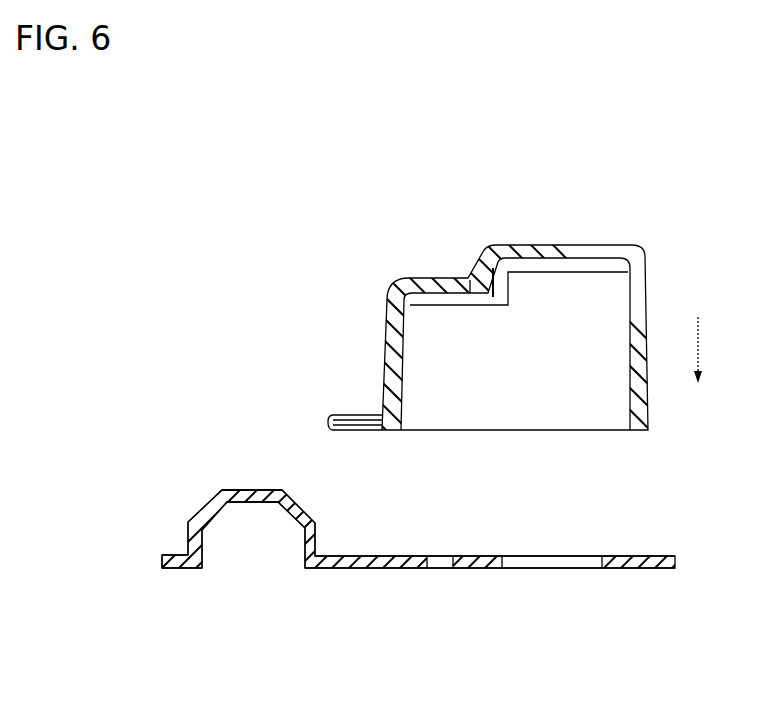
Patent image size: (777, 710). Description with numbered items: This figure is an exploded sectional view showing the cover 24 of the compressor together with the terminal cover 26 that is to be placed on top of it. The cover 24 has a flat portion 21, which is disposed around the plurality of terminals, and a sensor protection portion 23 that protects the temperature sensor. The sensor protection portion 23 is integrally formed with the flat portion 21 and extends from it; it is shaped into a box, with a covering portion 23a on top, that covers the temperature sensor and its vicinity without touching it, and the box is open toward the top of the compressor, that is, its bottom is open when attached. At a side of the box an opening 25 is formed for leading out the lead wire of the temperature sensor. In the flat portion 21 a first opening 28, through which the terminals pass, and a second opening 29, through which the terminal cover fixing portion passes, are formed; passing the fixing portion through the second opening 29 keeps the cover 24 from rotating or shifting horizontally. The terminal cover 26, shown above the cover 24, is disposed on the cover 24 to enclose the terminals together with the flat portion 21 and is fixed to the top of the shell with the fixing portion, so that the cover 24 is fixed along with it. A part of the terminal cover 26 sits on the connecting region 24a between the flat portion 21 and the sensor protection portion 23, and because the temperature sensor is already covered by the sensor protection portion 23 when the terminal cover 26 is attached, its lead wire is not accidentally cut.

The flat portion 21 is at (635, 570).
The sensor protection portion 23 is at (244, 470).
The covering portion 23a is at (207, 493).
The cover 24 is at (653, 548).
The connecting region 24a is at (368, 572).
The opening 25 is at (229, 567).
The terminal cover 26 is at (630, 250).
The first opening 28 is at (560, 570).
The second opening 29 is at (437, 570).